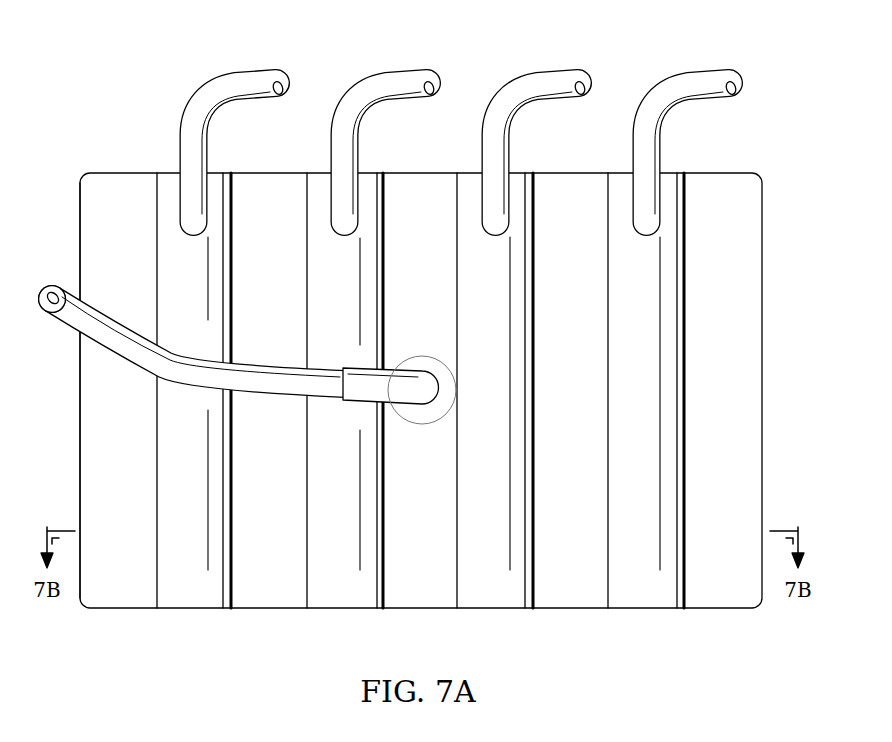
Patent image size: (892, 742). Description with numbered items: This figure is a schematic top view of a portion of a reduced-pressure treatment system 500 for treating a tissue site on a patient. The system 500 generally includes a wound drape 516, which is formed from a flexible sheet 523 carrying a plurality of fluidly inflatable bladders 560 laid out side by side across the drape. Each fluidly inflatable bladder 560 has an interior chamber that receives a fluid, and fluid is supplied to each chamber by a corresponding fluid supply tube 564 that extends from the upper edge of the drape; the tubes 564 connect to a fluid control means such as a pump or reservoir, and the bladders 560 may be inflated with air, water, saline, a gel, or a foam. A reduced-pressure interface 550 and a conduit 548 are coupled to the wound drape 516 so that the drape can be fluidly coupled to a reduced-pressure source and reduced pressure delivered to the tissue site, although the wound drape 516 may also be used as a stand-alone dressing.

The reduced-pressure treatment system 500 is at (136, 77).
The wound drape 516 is at (433, 169).
The flexible sheet 523 is at (118, 600).
The conduit 548 is at (67, 337).
The reduced-pressure interface 550 is at (420, 415).
The fluidly inflatable bladder 560 is at (192, 600).
The fluid supply tube 564 is at (206, 86).